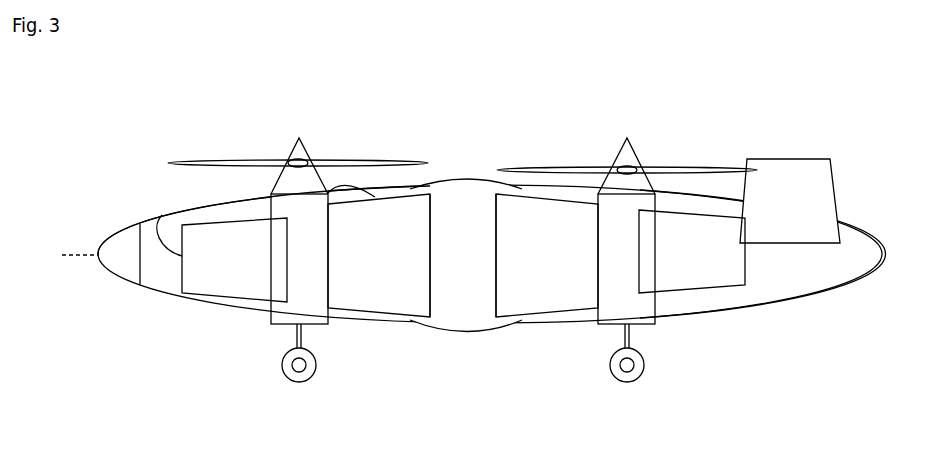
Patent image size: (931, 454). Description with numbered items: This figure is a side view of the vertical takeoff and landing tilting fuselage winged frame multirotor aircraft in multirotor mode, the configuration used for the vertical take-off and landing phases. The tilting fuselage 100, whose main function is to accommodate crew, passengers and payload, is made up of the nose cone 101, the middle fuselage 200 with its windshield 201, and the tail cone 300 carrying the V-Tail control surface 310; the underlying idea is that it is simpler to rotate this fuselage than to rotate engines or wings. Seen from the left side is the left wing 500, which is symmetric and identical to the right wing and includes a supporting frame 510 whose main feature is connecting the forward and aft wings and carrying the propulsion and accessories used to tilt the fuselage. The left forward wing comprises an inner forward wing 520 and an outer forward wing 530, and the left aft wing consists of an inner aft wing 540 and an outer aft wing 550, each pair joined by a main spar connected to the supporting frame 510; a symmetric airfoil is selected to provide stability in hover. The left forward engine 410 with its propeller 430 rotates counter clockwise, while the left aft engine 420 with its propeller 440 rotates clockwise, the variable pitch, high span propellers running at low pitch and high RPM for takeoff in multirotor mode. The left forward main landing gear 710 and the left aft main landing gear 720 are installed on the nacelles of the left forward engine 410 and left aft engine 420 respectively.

The tilting fuselage 100 is at (188, 325).
The nose cone 101 is at (123, 258).
The middle fuselage 200 is at (384, 195).
The windshield 201 is at (203, 214).
The tail cone 300 is at (792, 282).
The V-Tail control surface 310 is at (803, 197).
The left forward engine 410 is at (290, 210).
The left aft engine 420 is at (618, 217).
The propeller 430 is at (212, 162).
The propeller 440 is at (662, 168).
The left wing 500 is at (473, 167).
The supporting frame 510 is at (473, 283).
The inner forward wing 520 is at (392, 255).
The outer forward wing 530 is at (240, 265).
The inner aft wing 540 is at (542, 255).
The outer aft wing 550 is at (697, 270).
The left forward main landing gear 710 is at (316, 365).
The left aft main landing gear 720 is at (645, 365).